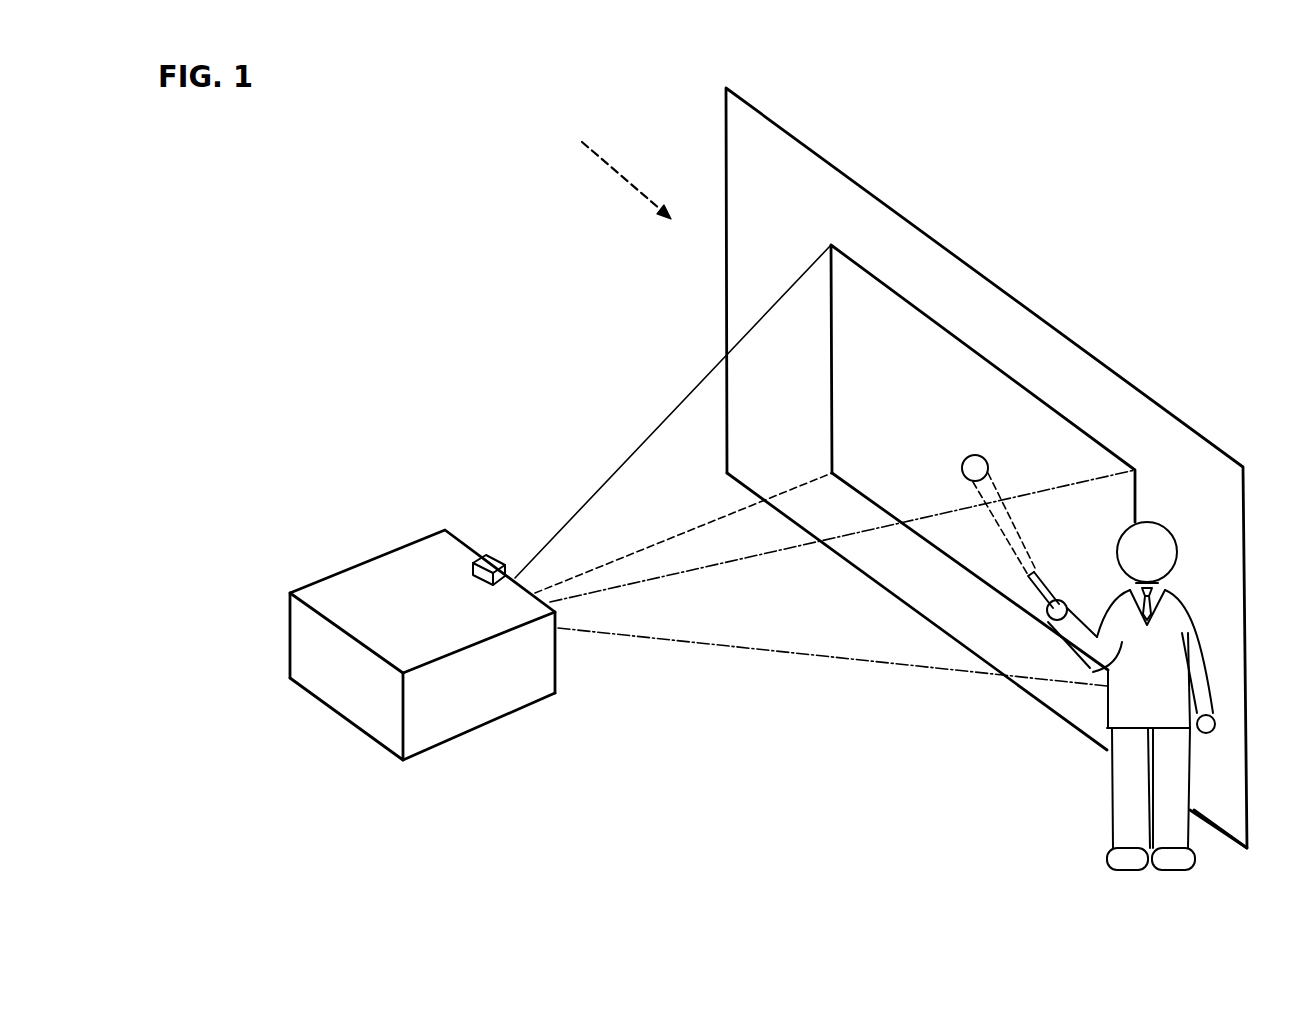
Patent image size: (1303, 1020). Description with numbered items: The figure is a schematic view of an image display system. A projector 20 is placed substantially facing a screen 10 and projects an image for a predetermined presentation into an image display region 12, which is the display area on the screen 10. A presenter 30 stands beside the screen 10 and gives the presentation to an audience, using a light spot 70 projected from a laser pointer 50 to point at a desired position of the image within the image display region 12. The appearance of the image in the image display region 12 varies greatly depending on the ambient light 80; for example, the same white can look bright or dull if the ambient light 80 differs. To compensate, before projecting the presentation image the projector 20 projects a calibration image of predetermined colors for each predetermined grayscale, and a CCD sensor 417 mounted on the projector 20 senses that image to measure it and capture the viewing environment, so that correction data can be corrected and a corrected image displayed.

The screen 10 is at (1021, 300).
The image display region 12 is at (1021, 384).
The projector 20 is at (537, 688).
The CCD sensor 417 is at (491, 562).
The presenter 30 is at (1153, 522).
The laser pointer 50 is at (1057, 590).
The light spot 70 is at (990, 460).
The ambient light 80 is at (600, 157).